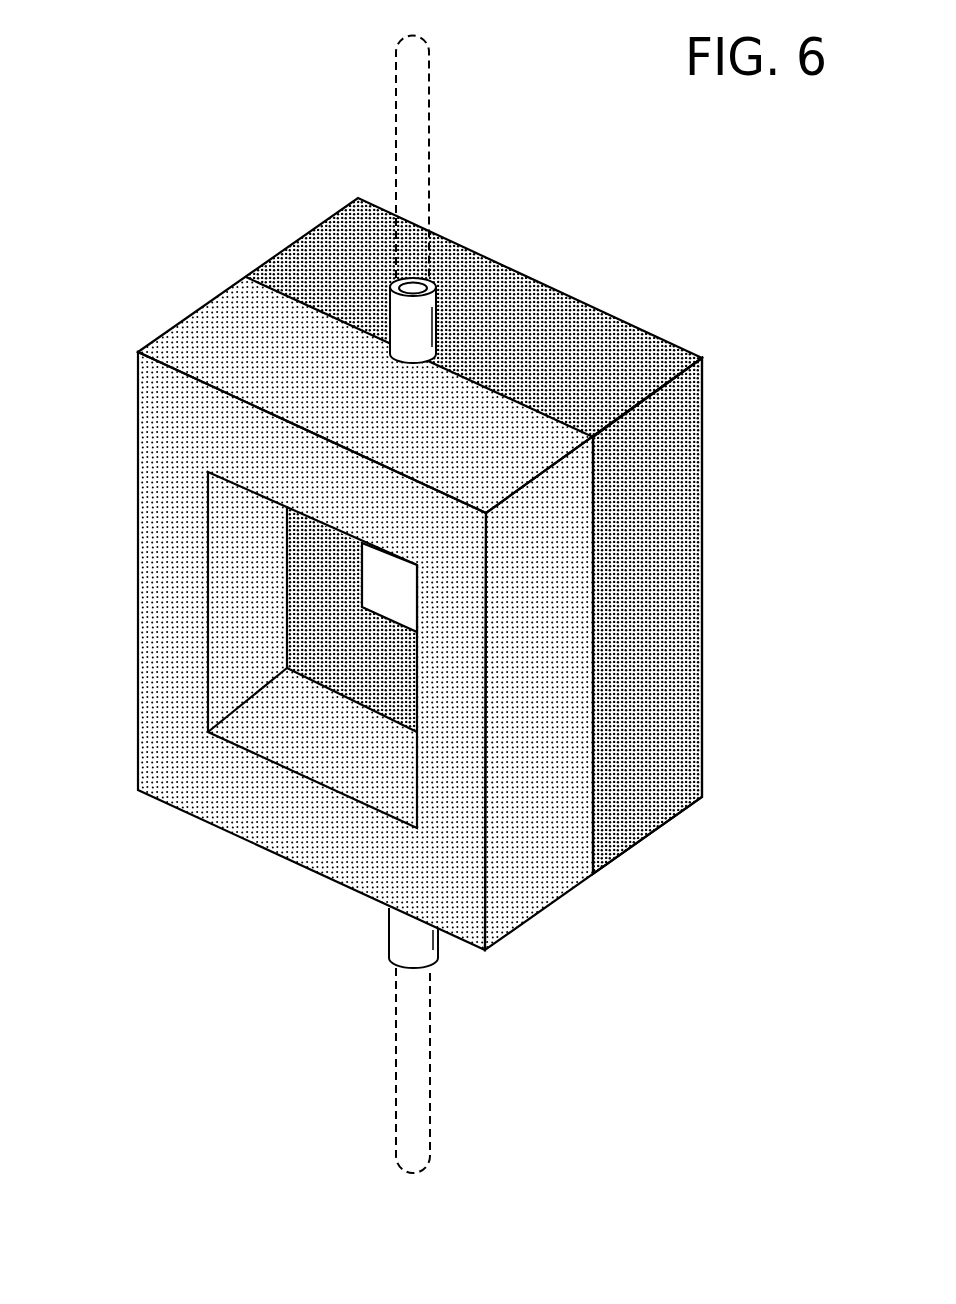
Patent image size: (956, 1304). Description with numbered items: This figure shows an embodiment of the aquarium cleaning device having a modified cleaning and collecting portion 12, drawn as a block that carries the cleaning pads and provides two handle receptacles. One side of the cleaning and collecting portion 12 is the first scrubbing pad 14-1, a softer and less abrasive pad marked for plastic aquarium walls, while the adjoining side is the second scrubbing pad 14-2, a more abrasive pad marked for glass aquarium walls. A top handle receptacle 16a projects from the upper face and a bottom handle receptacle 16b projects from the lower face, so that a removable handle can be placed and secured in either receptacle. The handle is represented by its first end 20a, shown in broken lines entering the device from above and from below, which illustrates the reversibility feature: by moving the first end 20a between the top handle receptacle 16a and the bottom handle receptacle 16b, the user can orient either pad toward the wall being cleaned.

The cleaning and collecting portion 12 is at (150, 232).
The first scrubbing pad 14-1 is at (138, 505).
The second scrubbing pad 14-2 is at (702, 558).
The top handle receptacle 16a is at (438, 308).
The bottom handle receptacle 16b is at (440, 952).
The first end of handle portion 20a is at (428, 128).